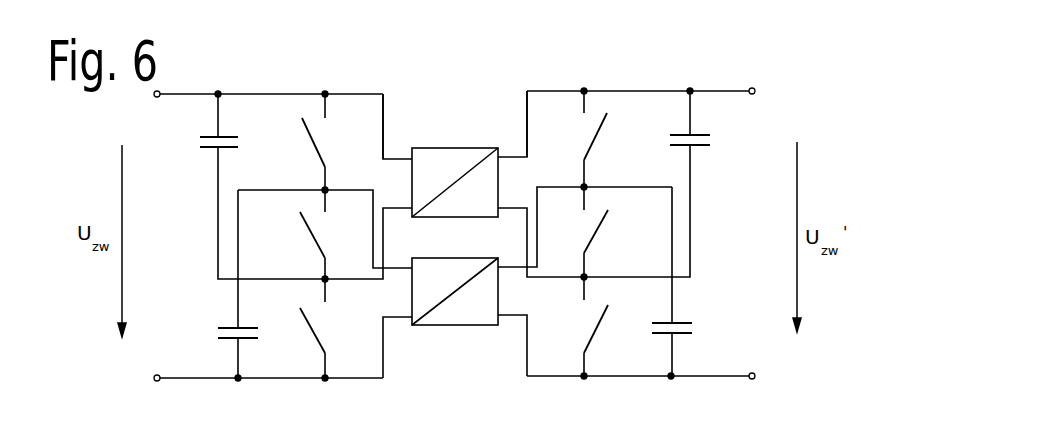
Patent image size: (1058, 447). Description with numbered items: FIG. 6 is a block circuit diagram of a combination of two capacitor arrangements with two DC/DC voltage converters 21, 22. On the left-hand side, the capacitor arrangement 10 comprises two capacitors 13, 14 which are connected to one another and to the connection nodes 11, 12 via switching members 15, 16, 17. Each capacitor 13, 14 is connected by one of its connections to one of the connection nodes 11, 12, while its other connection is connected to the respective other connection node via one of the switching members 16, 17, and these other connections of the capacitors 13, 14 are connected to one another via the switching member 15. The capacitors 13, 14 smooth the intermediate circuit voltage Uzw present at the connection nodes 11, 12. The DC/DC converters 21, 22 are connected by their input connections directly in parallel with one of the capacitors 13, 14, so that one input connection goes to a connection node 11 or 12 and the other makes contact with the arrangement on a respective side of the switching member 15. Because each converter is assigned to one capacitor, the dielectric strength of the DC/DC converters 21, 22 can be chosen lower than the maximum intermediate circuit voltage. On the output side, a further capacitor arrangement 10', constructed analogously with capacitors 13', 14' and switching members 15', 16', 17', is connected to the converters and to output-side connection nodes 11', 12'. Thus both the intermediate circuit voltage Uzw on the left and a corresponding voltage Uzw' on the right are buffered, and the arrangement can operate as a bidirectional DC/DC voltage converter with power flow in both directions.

The capacitor arrangement 10 is at (397, 79).
The further capacitor arrangement 10' is at (623, 78).
The connection node 11 is at (283, 94).
The output-side connection node 11' is at (629, 99).
The connection node 12 is at (283, 220).
The output-side connection node 12' is at (626, 372).
The capacitor 13 is at (283, 186).
The capacitor 13' is at (625, 184).
The capacitor 14 is at (277, 284).
The capacitor 14' is at (626, 281).
The switching member 15 is at (293, 236).
The switching member 15' is at (618, 233).
The switching member 16 is at (292, 143).
The switching member 16' is at (618, 140).
The switching member 17 is at (293, 328).
The switching member 17' is at (613, 326).
The DC/DC voltage converter 21 is at (452, 148).
The DC/DC voltage converter 22 is at (458, 326).